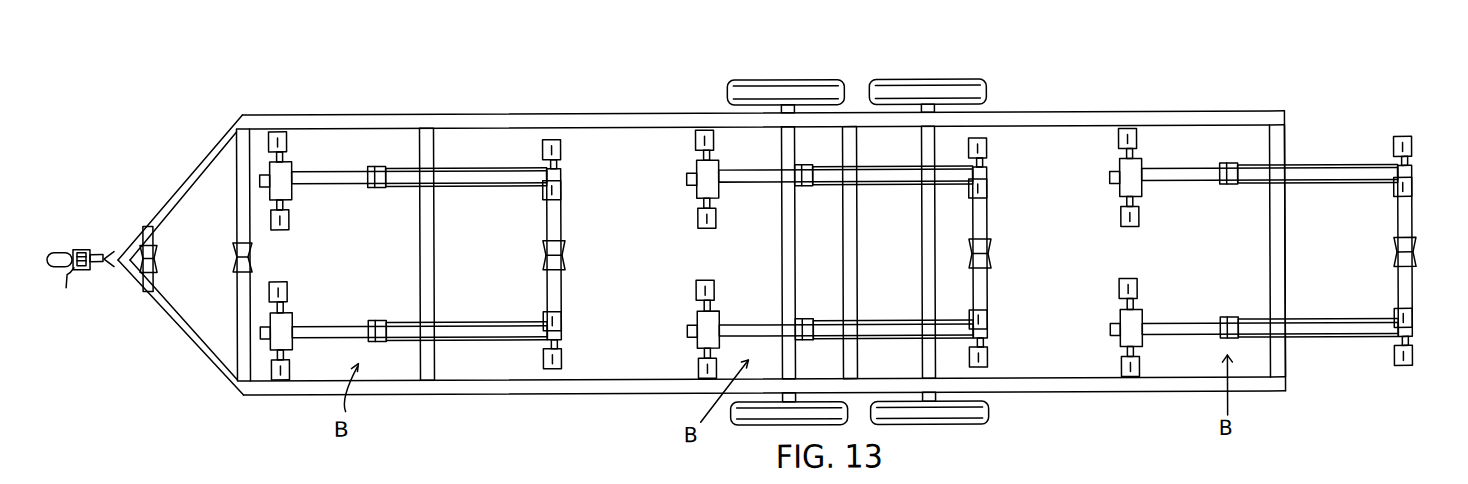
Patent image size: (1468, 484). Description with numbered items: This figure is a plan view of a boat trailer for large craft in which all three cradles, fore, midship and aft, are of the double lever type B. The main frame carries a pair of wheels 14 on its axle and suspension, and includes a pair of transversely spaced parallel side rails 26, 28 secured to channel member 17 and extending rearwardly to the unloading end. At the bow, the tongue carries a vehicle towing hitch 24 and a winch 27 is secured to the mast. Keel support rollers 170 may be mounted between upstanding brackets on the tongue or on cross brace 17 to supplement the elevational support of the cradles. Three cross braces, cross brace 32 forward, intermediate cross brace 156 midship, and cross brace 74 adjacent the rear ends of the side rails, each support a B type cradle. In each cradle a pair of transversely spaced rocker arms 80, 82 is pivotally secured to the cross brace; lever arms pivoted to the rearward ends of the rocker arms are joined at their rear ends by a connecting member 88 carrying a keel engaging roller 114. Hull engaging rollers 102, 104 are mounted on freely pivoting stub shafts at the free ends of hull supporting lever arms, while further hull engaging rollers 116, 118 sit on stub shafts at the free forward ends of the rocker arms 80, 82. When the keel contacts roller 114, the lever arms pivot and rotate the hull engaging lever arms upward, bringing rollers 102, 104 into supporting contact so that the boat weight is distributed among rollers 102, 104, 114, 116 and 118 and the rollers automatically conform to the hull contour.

The wheels 14 is at (940, 92).
The channel member 17 is at (237, 316).
The vehicle towing hitch 24 is at (58, 265).
The side rail 26 is at (634, 113).
The winch 27 is at (88, 247).
The side rail 28 is at (608, 388).
The cross brace 32 is at (433, 366).
The cross brace 74 is at (1285, 362).
The rocker arm 80 is at (333, 182).
The rocker arm 82 is at (352, 326).
The connecting member 88 is at (547, 216).
The hull engaging roller 102 is at (562, 187).
The hull engaging roller 104 is at (562, 361).
The keel engaging roller 114 is at (565, 261).
The hull engaging roller 116 is at (289, 219).
The hull engaging roller 118 is at (290, 365).
The intermediate cross brace 156 is at (852, 291).
The keel support roller 170 is at (233, 250).